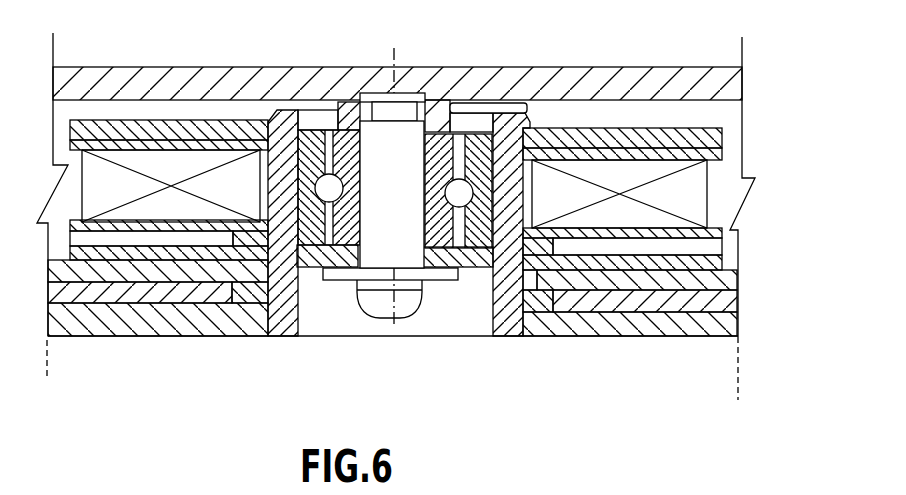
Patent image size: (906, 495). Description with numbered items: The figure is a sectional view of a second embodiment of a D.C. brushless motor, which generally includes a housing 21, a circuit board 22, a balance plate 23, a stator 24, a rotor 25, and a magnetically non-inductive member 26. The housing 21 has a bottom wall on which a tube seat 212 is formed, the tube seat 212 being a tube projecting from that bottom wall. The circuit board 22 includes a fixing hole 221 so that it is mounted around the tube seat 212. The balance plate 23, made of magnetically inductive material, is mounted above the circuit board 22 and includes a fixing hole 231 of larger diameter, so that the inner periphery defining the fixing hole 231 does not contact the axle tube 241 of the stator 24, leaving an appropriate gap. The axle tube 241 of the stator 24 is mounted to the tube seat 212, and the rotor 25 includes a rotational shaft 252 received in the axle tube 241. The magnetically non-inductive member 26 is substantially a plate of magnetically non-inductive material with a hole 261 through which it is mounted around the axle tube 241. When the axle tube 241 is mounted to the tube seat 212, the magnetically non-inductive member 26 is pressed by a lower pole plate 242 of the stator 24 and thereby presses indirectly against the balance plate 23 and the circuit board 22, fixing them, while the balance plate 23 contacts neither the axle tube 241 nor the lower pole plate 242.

The housing 21 is at (718, 333).
The circuit board 22 is at (727, 305).
The balance plate 23 is at (727, 280).
The stator 24 is at (685, 173).
The rotor 25 is at (268, 80).
The magnetically non-inductive member 26 is at (90, 252).
The tube seat 212 is at (563, 310).
The fixing hole 221 is at (242, 292).
The fixing hole 231 is at (283, 287).
The axle tube 241 is at (290, 295).
The lower pole plate 242 is at (572, 128).
The rotational shaft 252 is at (402, 243).
The hole 261 is at (508, 253).